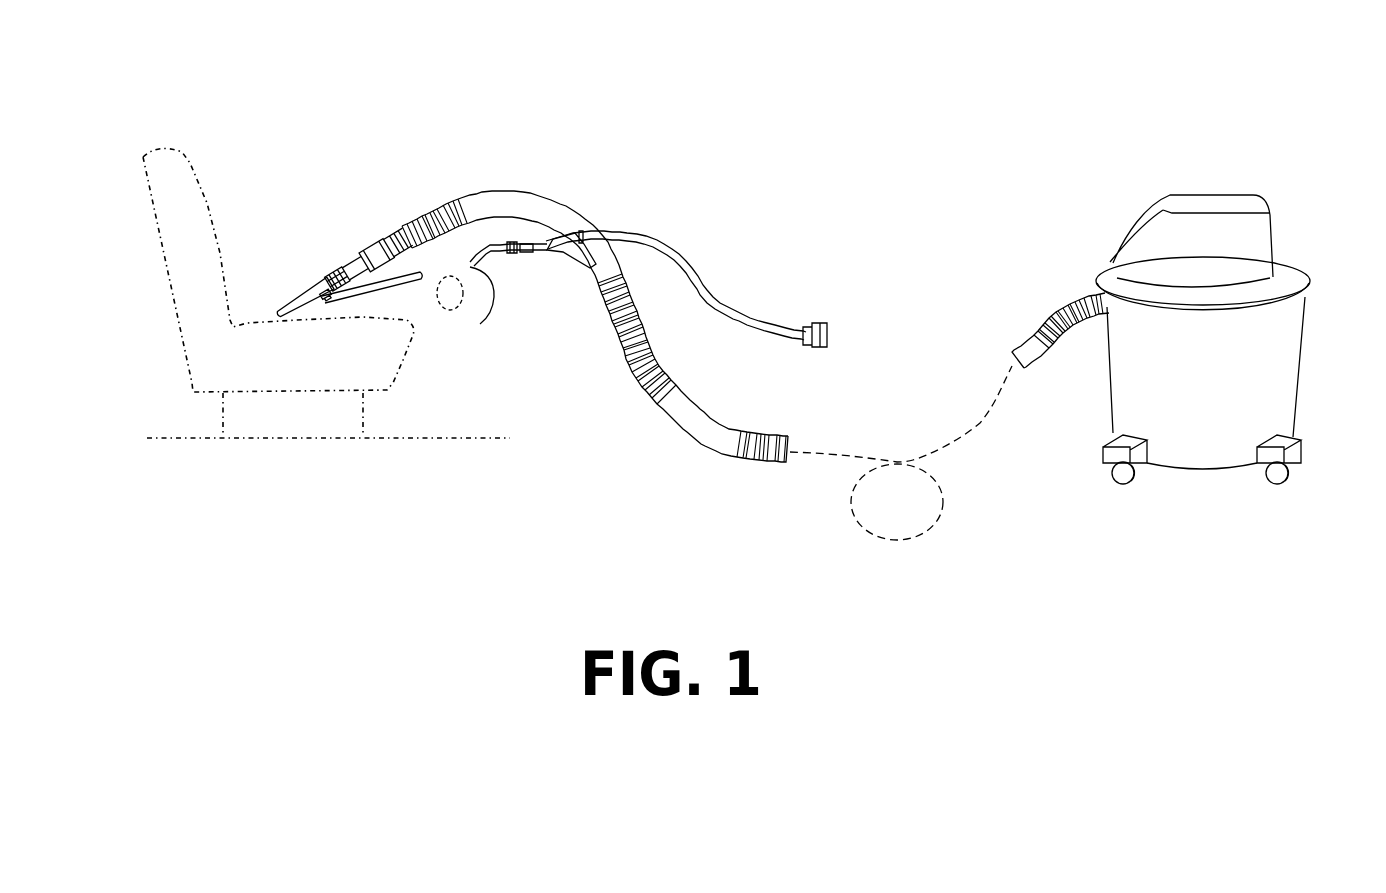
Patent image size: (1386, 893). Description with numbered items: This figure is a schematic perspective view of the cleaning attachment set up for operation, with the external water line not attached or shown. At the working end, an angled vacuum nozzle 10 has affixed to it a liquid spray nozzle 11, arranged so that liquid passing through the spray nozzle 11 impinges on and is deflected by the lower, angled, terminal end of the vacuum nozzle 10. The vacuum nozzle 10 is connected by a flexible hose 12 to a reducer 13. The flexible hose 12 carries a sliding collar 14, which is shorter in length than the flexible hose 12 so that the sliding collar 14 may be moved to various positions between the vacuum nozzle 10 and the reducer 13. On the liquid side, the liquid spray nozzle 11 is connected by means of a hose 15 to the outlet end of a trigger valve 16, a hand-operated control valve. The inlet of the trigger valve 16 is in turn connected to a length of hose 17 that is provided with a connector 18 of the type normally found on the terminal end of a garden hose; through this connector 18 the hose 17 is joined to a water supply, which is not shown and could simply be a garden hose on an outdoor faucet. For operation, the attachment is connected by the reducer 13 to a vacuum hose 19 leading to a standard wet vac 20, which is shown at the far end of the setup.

The angled vacuum nozzle 10 is at (292, 299).
The liquid spray nozzle 11 is at (320, 299).
The flexible hose 12 is at (334, 268).
The reducer 13 is at (370, 240).
The sliding collar 14 is at (350, 257).
The hose 15 is at (397, 286).
The trigger valve 16 is at (548, 258).
The hose 17 is at (700, 279).
The connector 18 is at (817, 323).
The vacuum hose 19 is at (687, 407).
The wet vac 20 is at (1232, 380).